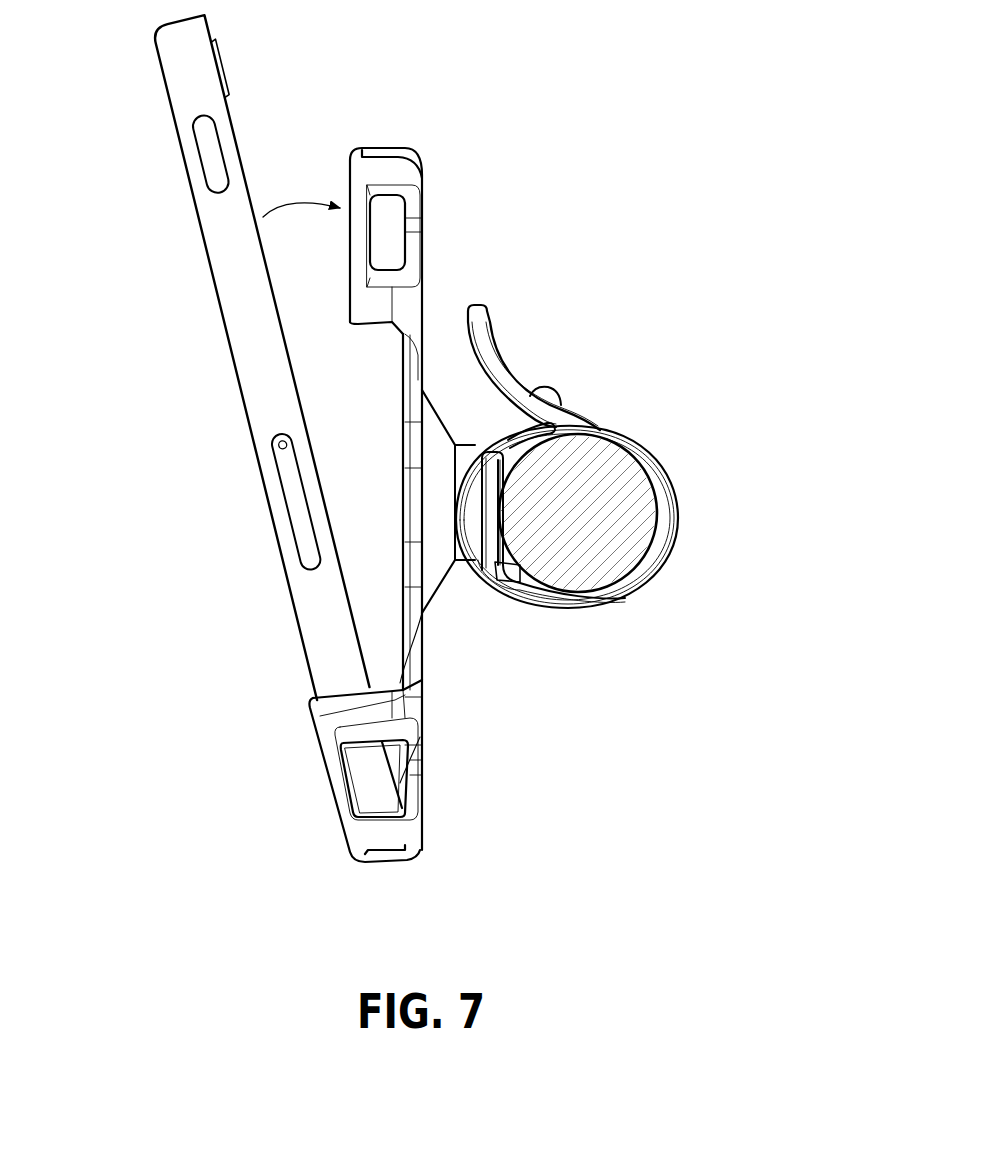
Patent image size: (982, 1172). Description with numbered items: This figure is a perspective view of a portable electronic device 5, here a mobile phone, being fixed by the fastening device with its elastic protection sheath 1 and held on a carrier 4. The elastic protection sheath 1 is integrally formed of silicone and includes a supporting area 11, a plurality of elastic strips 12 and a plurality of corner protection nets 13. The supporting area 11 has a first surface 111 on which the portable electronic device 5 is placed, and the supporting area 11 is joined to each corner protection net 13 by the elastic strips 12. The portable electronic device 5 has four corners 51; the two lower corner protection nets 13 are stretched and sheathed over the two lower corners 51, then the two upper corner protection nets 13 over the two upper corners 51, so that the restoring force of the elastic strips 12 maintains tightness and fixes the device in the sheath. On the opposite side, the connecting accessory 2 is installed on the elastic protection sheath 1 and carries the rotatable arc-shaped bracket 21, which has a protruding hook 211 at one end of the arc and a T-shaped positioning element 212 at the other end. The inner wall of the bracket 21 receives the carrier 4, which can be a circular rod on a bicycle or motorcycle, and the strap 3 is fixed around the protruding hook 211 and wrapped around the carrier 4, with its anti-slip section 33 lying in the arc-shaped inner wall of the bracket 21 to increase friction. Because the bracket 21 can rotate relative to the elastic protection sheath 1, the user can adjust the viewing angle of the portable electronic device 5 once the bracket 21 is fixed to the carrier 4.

The elastic protection sheath 1 is at (440, 170).
The connecting accessory 2 is at (633, 257).
The strap 3 is at (670, 520).
The carrier 4 is at (617, 500).
The portable electronic device 5 is at (220, 233).
The supporting area 11 is at (410, 503).
The elastic strip 12 is at (410, 623).
The corner protection net 13 is at (350, 192).
The bracket 21 is at (467, 443).
The anti-slip section 33 is at (455, 557).
The corner 51 is at (373, 787).
The first surface 111 is at (403, 383).
The protruding hook 211 is at (545, 390).
The positioning element 212 is at (512, 577).